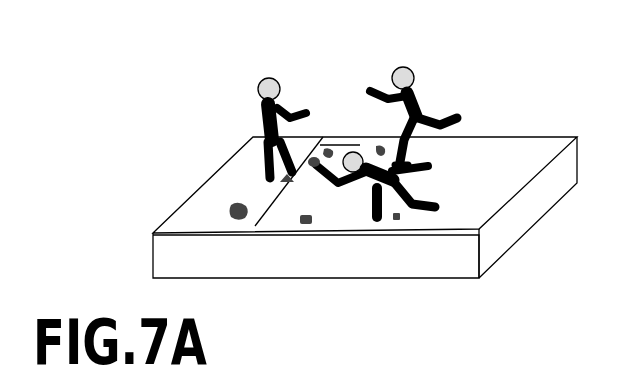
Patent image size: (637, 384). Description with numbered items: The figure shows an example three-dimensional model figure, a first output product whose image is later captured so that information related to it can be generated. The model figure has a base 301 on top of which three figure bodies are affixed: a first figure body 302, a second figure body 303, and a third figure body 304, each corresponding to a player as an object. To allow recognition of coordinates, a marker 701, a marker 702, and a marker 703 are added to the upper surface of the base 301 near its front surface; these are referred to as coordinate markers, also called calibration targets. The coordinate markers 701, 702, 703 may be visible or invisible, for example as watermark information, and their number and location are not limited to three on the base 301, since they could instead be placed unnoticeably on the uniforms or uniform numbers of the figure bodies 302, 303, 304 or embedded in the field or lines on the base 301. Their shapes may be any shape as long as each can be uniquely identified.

The base 301 is at (520, 137).
The first figure body 302 is at (271, 78).
The second figure body 303 is at (403, 69).
The third figure body 304 is at (436, 204).
The marker 701 is at (240, 208).
The marker 702 is at (307, 225).
The marker 703 is at (396, 221).